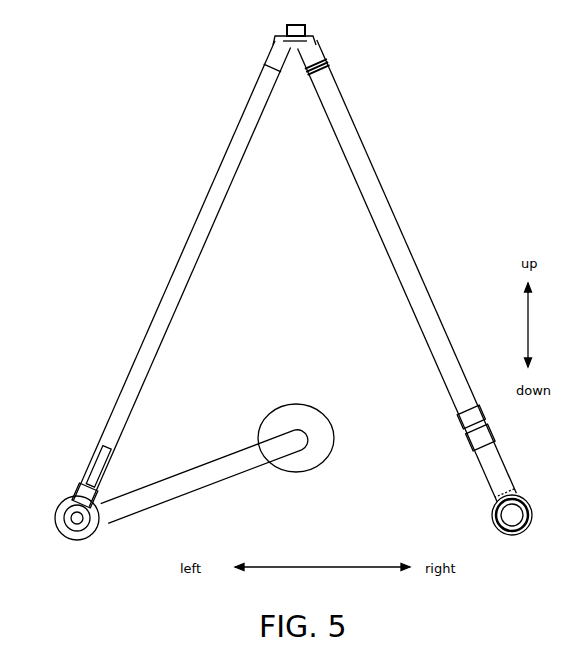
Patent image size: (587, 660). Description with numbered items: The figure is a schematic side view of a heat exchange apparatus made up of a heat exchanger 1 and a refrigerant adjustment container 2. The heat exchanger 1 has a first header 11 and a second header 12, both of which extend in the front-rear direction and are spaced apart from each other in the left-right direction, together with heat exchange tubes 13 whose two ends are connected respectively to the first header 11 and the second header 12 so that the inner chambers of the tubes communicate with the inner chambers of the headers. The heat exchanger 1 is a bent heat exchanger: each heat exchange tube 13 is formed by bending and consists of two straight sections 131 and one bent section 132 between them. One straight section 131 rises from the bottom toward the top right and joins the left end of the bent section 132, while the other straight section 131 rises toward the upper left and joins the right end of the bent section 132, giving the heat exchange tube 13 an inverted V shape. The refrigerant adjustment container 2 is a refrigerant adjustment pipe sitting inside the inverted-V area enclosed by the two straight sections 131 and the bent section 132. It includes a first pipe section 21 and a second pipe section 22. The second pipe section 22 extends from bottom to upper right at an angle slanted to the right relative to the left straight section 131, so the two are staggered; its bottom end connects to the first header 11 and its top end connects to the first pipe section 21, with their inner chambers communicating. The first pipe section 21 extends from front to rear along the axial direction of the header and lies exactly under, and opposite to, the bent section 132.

The heat exchanger 1 is at (191, 173).
The first header 11 is at (70, 507).
The second header 12 is at (501, 524).
The heat exchange tube 13 is at (350, 136).
The straight section 131 is at (168, 293).
The bent section 132 is at (309, 41).
The refrigerant adjustment container 2 is at (245, 480).
The first pipe section 21 is at (298, 424).
The second pipe section 22 is at (192, 476).